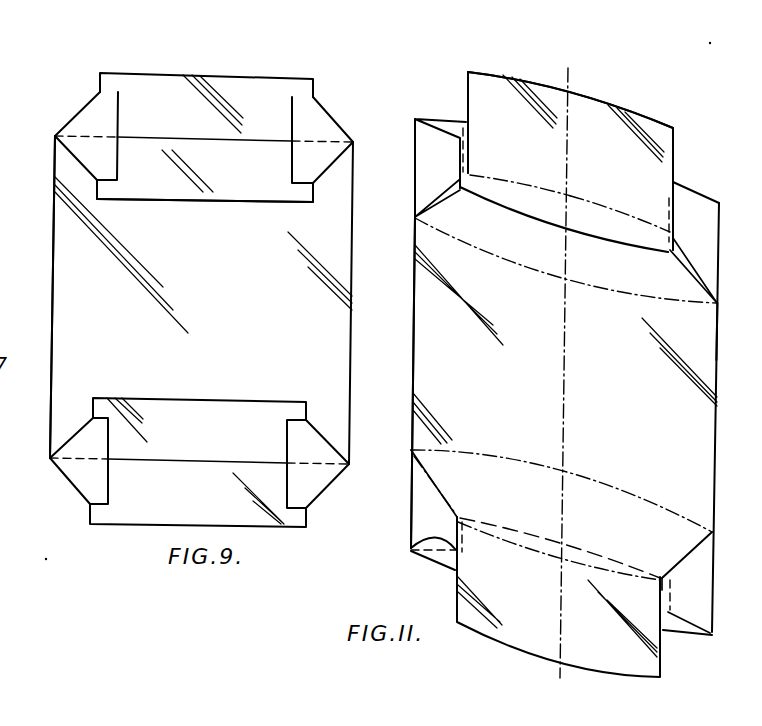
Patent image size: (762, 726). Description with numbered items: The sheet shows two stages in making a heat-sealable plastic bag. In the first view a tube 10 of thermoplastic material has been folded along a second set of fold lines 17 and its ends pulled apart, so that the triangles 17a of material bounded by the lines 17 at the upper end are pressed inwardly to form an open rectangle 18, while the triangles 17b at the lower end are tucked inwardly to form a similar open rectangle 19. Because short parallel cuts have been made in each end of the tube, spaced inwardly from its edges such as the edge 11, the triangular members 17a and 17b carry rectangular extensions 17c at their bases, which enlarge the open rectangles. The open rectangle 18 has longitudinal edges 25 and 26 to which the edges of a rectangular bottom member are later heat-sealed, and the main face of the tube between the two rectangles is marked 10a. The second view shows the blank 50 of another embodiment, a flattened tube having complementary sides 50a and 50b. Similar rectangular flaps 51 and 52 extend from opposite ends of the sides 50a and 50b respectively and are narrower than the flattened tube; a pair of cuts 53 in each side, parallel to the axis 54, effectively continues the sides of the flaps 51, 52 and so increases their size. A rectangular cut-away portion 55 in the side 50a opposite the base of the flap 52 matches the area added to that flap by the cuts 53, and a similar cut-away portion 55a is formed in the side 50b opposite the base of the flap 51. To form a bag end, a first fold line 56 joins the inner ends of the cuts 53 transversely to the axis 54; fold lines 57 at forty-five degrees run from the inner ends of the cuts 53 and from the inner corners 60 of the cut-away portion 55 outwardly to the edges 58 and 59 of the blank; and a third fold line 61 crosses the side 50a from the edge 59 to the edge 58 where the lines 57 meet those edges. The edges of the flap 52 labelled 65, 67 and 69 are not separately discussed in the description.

In FIG. 9, the tube 10 is at (52, 245).
In FIG. 9, the body panel 10a is at (245, 344).
In FIG. 9, the edge 11 is at (52, 285).
In FIG. 9, the fold lines 17 is at (60, 147).
In FIG. 9, the triangles 17a is at (83, 160).
In FIG. 9, the triangles 17b is at (72, 470).
In FIG. 9, the rectangular extensions 17c is at (105, 101).
In FIG. 9, the open rectangle 18 is at (243, 171).
In FIG. 9, the open rectangle 19 is at (221, 444).
In FIG. 9, the edge 25 is at (181, 76).
In FIG. 9, the edge 26 is at (230, 202).
In FIG. 11, the blank 50 is at (404, 381).
In FIG. 11, the side 50a is at (540, 391).
In FIG. 11, the side 50b is at (623, 218).
In FIG. 11, the rectangular flap 51 is at (520, 597).
In FIG. 11, the rectangular flap 52 is at (525, 151).
In FIG. 11, the cuts 53 is at (466, 122).
In FIG. 11, the axis 54 is at (573, 83).
In FIG. 11, the rectangular cut-away portion 55 is at (591, 236).
In FIG. 11, the cut-away portion 55a is at (533, 523).
In FIG. 11, the first fold line 56 is at (585, 197).
In FIG. 11, the fold lines 57 is at (418, 215).
In FIG. 11, the edge 58 is at (716, 332).
In FIG. 11, the edge 59 is at (413, 293).
In FIG. 11, the inner corners 60 is at (465, 188).
In FIG. 11, the third fold line 61 is at (469, 242).
In FIG. 11, the panel edge 65 is at (468, 99).
In FIG. 11, the panel edge 67 is at (675, 142).
In FIG. 11, the top edge 69 is at (662, 125).